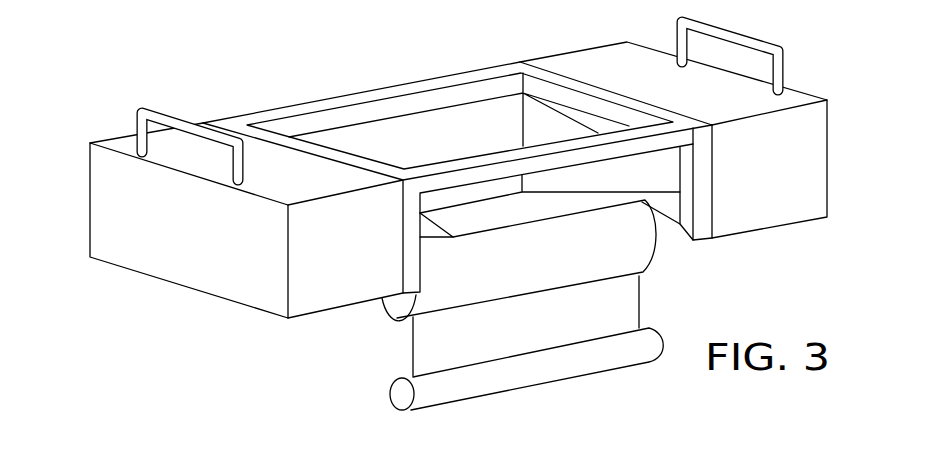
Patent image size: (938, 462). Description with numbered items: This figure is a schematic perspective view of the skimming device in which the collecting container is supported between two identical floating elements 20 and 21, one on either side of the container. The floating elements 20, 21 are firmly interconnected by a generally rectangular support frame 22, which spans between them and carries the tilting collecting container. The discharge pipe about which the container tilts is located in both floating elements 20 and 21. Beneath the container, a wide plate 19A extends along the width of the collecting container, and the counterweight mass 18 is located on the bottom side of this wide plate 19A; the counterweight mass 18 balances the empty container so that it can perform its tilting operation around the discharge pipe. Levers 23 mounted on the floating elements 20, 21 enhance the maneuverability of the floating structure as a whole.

The counterweight mass 18 is at (390, 403).
The wide plate 19A is at (412, 337).
The floating element 20 is at (127, 232).
The floating element 21 is at (798, 165).
The support frame 22 is at (382, 90).
The lever 23 is at (168, 125).